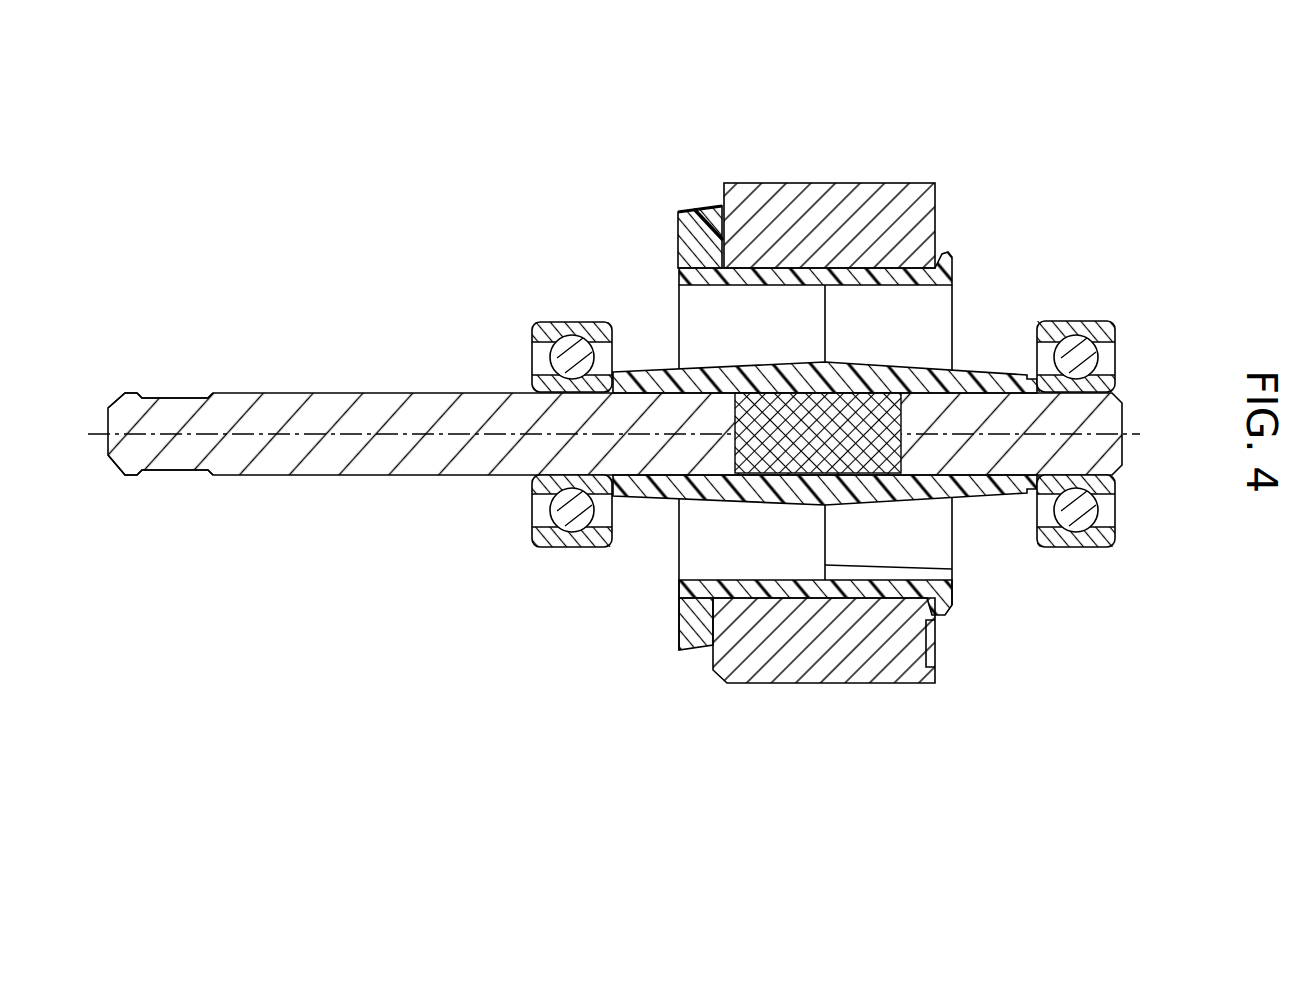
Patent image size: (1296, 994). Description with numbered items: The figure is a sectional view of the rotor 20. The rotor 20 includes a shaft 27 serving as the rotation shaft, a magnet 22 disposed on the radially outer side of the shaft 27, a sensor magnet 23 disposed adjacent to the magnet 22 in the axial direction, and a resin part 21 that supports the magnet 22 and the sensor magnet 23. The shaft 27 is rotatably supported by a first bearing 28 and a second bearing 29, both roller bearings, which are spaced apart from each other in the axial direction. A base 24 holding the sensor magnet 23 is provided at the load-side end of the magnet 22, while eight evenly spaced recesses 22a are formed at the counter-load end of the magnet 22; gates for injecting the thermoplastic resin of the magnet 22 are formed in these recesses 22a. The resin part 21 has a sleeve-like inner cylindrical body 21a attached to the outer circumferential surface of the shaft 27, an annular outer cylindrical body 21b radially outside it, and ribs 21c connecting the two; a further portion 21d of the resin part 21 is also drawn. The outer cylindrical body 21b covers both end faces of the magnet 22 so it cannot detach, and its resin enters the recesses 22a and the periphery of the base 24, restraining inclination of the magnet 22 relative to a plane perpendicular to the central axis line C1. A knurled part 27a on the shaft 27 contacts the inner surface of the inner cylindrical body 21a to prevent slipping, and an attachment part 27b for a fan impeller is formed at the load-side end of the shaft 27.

The rotor 20 is at (1036, 170).
The resin part 21 is at (655, 375).
The inner cylindrical body 21a is at (648, 500).
The outer cylindrical body 21b is at (947, 607).
The ribs 21c is at (920, 315).
The step portion 21d is at (942, 573).
The magnet 22 is at (828, 200).
The recesses 22a is at (927, 640).
The sensor magnet 23 is at (690, 238).
The base 24 is at (716, 228).
The shaft 27 is at (325, 455).
The knurled part 27a is at (855, 408).
The attachment part 27b is at (172, 393).
The first bearing 28 is at (572, 325).
The second bearing 29 is at (1077, 320).
The central axis line C1 is at (409, 437).